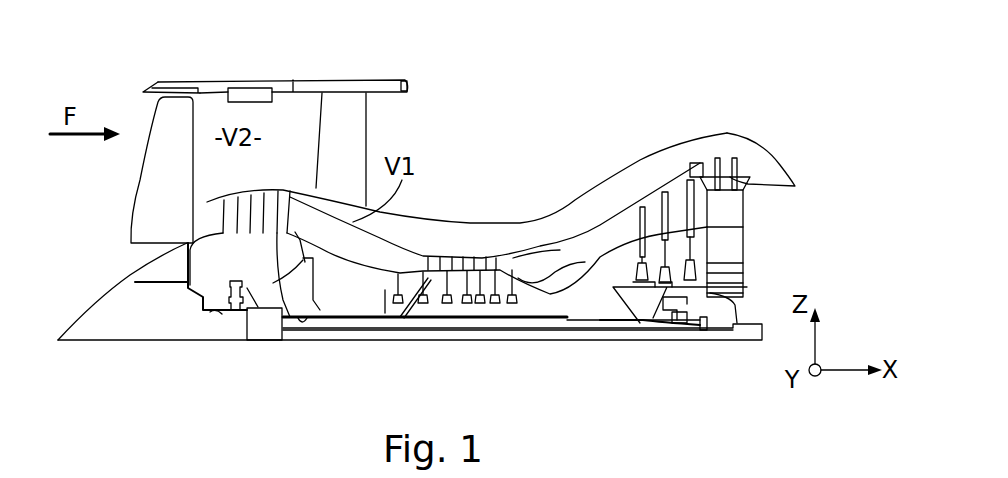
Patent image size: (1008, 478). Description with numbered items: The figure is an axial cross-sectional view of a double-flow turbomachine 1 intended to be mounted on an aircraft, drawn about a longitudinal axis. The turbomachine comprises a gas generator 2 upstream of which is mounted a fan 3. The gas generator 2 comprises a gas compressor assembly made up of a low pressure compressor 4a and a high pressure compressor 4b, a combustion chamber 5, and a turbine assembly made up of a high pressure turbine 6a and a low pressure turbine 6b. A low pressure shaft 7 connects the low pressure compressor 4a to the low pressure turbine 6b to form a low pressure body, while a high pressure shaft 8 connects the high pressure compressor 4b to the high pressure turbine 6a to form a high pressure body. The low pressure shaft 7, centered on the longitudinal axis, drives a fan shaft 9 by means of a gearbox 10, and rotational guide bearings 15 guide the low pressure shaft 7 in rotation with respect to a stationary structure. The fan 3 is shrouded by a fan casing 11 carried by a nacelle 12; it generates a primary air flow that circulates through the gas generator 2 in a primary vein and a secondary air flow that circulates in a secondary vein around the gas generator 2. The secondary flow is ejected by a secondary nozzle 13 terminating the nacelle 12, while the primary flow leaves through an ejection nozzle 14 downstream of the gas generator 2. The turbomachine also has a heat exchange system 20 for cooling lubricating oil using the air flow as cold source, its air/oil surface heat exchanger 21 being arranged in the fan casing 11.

The double-flow turbomachine 1 is at (541, 138).
The gas generator 2 is at (500, 362).
The fan 3 is at (100, 184).
The low pressure compressor 4a is at (300, 330).
The high pressure compressor 4b is at (437, 300).
The combustion chamber 5 is at (548, 267).
The high pressure turbine 6a is at (678, 263).
The low pressure turbine 6b is at (743, 207).
The low pressure shaft 7 is at (377, 330).
The high pressure shaft 8 is at (600, 337).
The fan shaft 9 is at (228, 325).
The gearbox 10 is at (270, 330).
The fan casing 11 is at (200, 92).
The nacelle 12 is at (295, 82).
The secondary nozzle 13 is at (407, 85).
The ejection nozzle 14 is at (780, 167).
The rotational guide bearings 15 is at (212, 315).
The heat exchange system 20 is at (258, 72).
The heat exchanger 21 is at (233, 91).